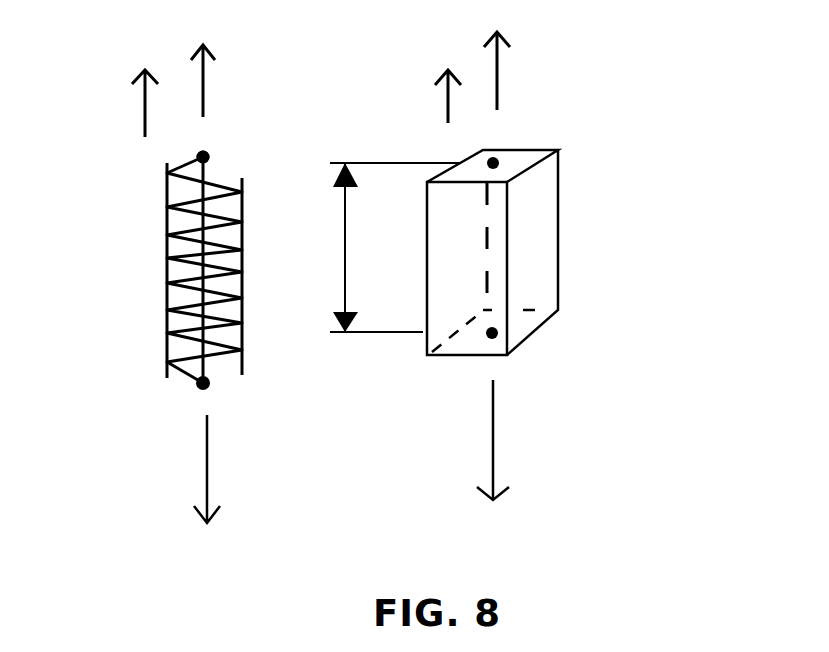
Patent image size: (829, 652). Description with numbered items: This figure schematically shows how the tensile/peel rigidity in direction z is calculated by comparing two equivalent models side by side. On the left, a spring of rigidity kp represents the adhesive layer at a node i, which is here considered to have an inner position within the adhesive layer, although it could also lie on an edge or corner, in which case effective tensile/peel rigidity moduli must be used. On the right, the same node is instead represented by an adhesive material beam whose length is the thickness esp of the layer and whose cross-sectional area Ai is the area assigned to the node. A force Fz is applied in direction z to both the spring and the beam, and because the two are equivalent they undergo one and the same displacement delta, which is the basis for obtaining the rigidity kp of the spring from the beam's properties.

The spring rigidity kp is at (170, 258).
The node i is at (222, 157).
The cross-sectional area assigned to the node Ai is at (500, 158).
The thickness of the adhesive layer esp is at (367, 247).
The force in direction z Fz is at (377, 74).
The displacement delta is at (270, 102).